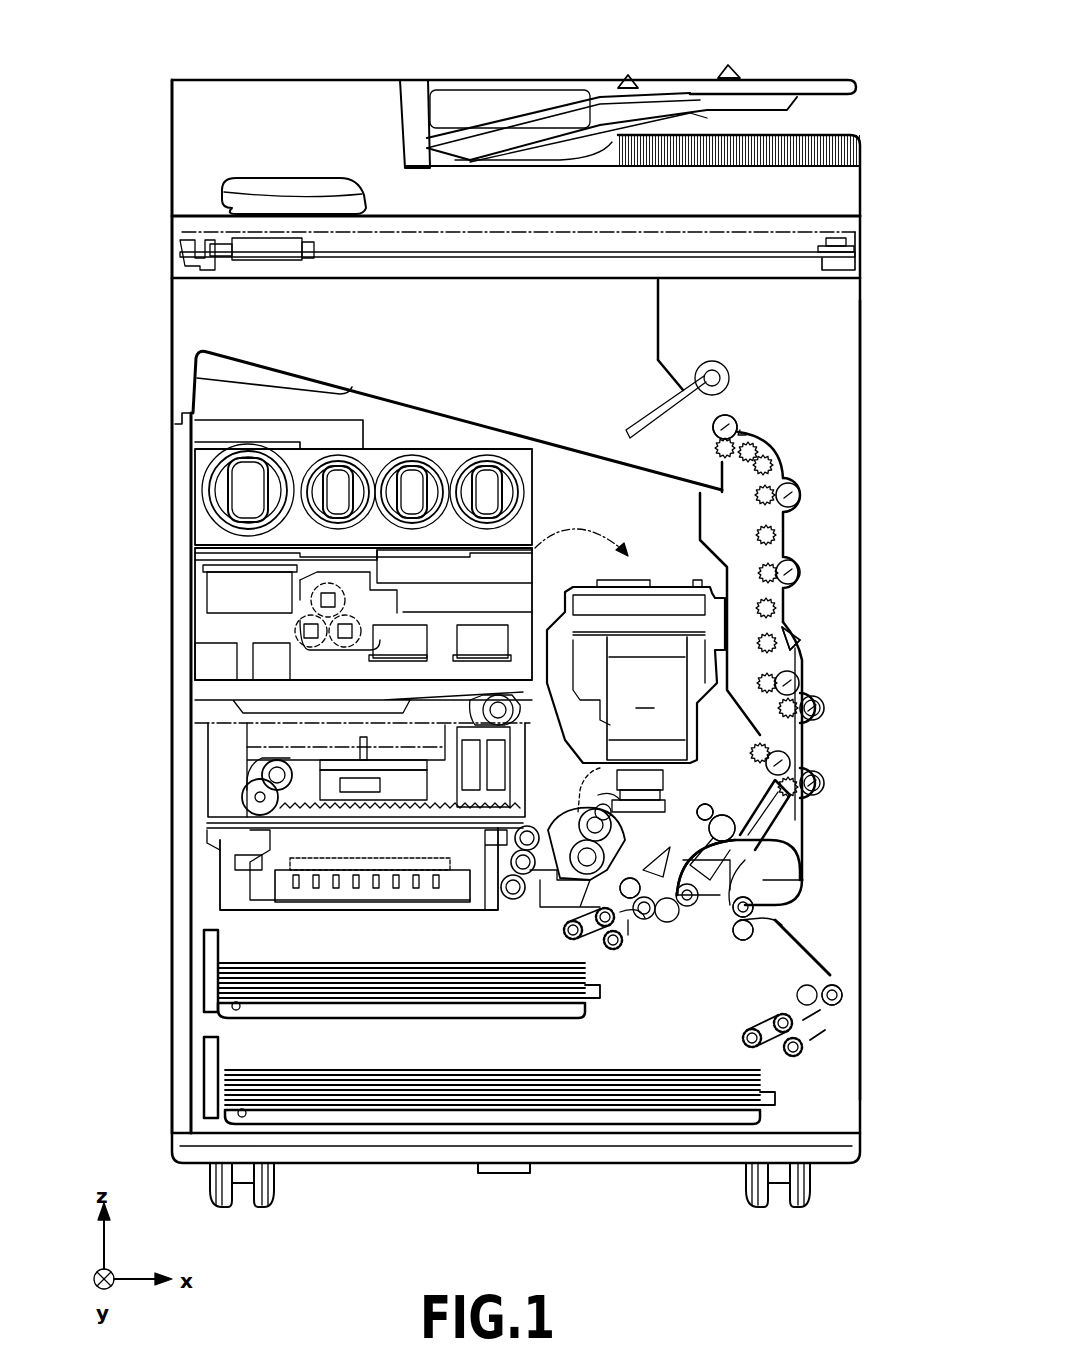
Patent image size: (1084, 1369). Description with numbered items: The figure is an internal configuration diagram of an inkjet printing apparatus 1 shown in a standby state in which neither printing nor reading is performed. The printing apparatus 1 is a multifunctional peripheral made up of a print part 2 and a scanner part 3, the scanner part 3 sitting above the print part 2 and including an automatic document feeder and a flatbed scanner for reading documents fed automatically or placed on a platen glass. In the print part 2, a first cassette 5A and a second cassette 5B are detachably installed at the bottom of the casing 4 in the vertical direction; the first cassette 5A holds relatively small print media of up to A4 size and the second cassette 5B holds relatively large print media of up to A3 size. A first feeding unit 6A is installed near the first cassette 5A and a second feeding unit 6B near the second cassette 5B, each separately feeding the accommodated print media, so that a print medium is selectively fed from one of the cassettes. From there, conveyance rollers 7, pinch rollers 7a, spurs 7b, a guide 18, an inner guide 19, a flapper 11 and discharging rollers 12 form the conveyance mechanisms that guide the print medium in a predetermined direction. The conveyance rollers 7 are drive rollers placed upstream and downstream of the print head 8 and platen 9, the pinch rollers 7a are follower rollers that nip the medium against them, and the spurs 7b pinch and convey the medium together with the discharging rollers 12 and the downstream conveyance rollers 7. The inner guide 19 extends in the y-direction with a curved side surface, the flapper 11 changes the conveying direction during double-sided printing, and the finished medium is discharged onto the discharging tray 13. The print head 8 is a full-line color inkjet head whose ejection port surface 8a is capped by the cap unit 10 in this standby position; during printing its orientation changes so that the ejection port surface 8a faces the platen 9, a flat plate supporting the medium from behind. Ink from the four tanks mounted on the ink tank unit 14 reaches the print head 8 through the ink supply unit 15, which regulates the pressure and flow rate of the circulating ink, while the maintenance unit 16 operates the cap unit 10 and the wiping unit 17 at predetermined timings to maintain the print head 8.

The inkjet printing apparatus 1 is at (805, 55).
The print part 2 is at (97, 282).
The scanner part 3 is at (97, 80).
The casing 4 is at (862, 368).
The first cassette 5A is at (212, 980).
The second cassette 5B is at (212, 1088).
The first feeding unit 6A is at (620, 945).
The second feeding unit 6B is at (805, 1045).
The conveyance rollers 7 is at (790, 493).
The pinch rollers 7a is at (705, 822).
The spurs 7b is at (743, 433).
The print head 8 is at (636, 700).
The ejection port surface 8a is at (780, 825).
The platen 9 is at (770, 845).
The cap unit 10 is at (770, 880).
The flapper 11 is at (790, 656).
The discharging rollers 12 is at (740, 428).
The discharging tray 13 is at (462, 412).
The ink tank unit 14 is at (200, 452).
The ink supply unit 15 is at (205, 632).
The maintenance unit 16 is at (215, 870).
The wiping unit 17 is at (215, 745).
The guide 18 is at (790, 555).
The inner guide 19 is at (745, 915).